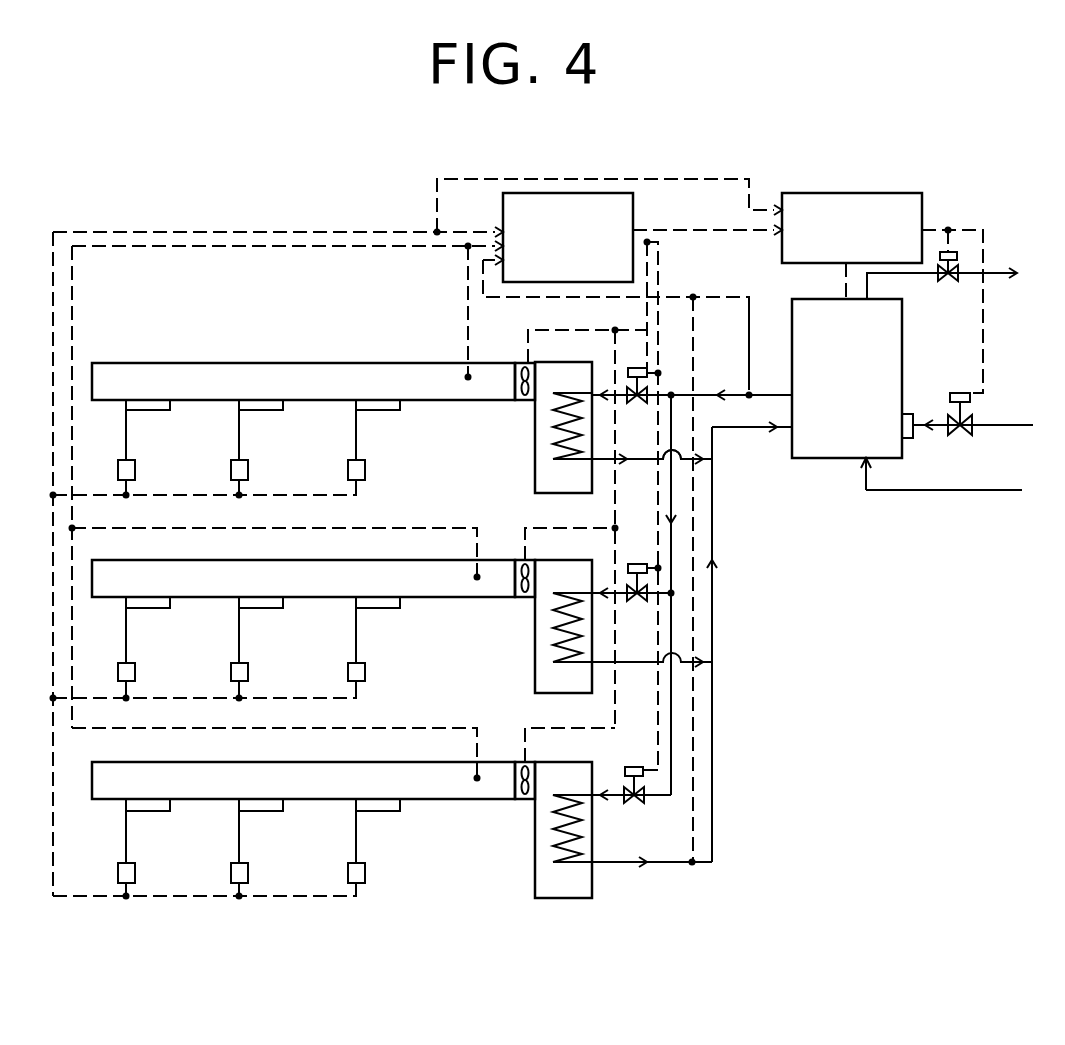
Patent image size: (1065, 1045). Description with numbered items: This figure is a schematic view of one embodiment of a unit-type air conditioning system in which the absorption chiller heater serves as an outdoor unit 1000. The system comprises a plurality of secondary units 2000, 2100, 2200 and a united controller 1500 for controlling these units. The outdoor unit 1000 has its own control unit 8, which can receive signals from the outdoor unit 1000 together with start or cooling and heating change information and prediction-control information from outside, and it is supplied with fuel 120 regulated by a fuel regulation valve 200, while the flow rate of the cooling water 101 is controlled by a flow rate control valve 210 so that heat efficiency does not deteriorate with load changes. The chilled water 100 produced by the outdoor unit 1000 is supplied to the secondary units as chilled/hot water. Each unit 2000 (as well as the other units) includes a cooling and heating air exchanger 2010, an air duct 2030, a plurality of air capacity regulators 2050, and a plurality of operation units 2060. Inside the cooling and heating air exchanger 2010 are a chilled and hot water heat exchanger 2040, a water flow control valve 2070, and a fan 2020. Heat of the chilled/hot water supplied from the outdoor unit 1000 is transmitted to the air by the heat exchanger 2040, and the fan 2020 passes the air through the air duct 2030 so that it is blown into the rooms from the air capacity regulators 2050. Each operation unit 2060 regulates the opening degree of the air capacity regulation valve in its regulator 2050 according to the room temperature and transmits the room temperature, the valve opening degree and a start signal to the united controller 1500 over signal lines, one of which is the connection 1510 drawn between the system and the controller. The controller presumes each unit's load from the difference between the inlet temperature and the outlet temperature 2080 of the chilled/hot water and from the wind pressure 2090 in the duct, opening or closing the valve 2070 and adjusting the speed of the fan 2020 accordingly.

The control unit 8 is at (850, 193).
The chilled water 100 is at (749, 398).
The cooling water 101 is at (955, 490).
The fuel 120 is at (1012, 425).
The fuel regulation valve 200 is at (955, 392).
The flow rate control valve 210 is at (957, 265).
The outdoor unit 1000 is at (845, 460).
The united controller 1500 is at (634, 200).
The signal line 1510 is at (749, 390).
The secondary unit 2000 is at (152, 363).
The cooling and heating air exchanger 2010 is at (523, 445).
The fan 2020 is at (522, 400).
The air duct 2030 is at (334, 363).
The chilled and hot water heat exchanger 2040 is at (570, 461).
The air capacity regulator 2050 is at (398, 410).
The operation unit 2060 is at (368, 470).
The water flow control valve 2070 is at (640, 368).
The outlet temperature 2080 is at (681, 458).
The wind pressure 2090 is at (466, 375).
The secondary unit 2100 is at (232, 560).
The secondary unit 2200 is at (227, 762).